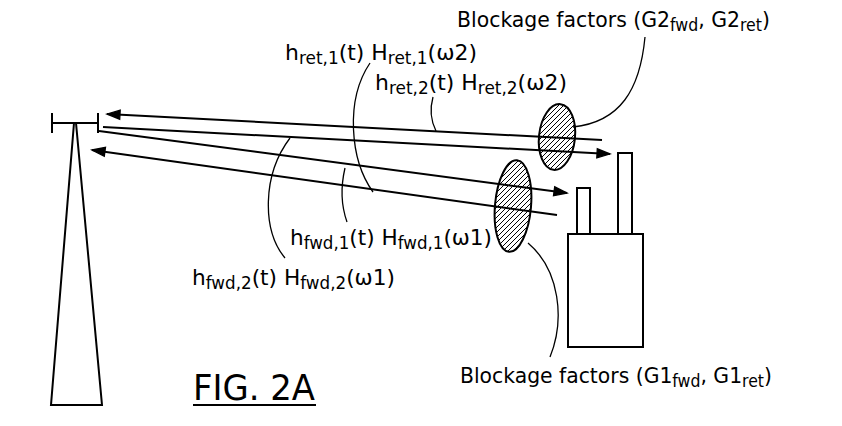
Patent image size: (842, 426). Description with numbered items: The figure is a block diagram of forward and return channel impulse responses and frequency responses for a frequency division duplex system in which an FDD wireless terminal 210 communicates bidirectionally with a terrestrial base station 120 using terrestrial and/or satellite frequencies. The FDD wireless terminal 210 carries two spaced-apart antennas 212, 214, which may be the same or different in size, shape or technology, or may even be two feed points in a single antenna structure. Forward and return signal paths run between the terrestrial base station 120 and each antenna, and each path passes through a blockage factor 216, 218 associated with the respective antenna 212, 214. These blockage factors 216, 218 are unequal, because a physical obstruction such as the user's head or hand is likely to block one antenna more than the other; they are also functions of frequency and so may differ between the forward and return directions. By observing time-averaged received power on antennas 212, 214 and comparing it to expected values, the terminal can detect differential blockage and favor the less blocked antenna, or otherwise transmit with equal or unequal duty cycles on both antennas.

The terrestrial base station 120 is at (93, 307).
The FDD wireless terminal 210 is at (643, 292).
The antenna 212 is at (590, 207).
The antenna 214 is at (633, 168).
The blockage factor 216 is at (498, 247).
The blockage factor 218 is at (573, 113).